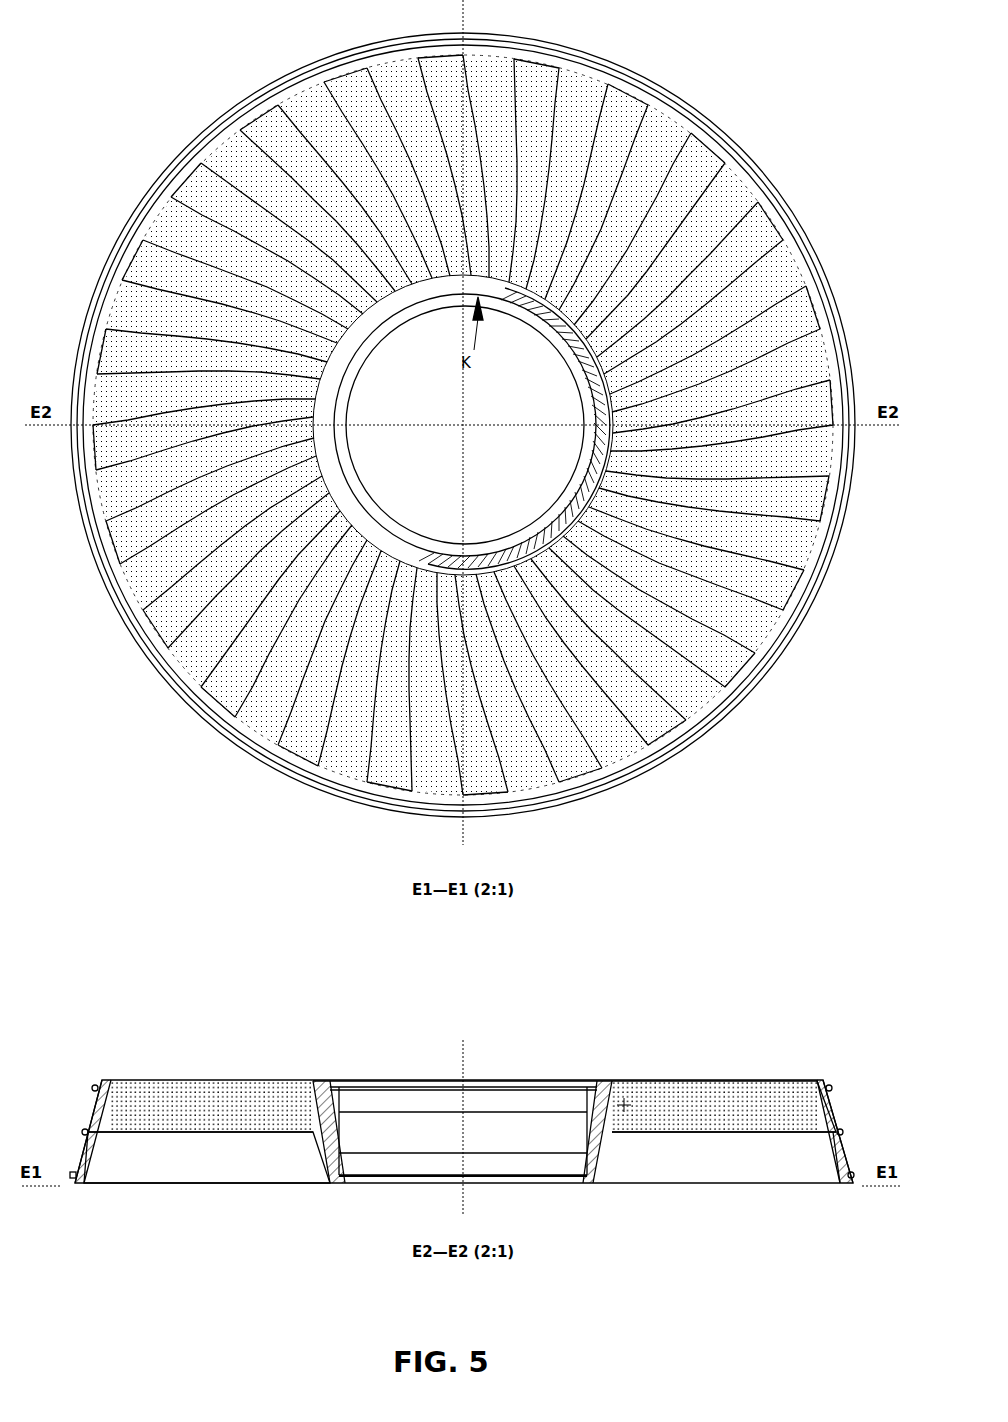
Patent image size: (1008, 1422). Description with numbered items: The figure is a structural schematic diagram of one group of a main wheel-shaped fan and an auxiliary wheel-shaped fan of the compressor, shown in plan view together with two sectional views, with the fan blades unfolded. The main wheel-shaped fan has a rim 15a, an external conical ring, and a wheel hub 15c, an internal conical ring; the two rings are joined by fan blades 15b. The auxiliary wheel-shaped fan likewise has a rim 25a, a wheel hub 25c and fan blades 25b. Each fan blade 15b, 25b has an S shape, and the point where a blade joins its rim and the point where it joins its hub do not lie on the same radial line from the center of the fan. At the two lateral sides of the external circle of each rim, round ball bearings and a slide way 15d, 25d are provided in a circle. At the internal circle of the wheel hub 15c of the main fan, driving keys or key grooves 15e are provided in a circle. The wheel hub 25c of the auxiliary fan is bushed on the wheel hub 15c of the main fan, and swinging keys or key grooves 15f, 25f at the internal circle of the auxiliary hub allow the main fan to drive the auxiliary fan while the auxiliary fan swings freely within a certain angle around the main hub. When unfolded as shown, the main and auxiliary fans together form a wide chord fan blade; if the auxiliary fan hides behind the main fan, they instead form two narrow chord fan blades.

The rim 15a is at (217, 133).
The fan blade 15b is at (200, 207).
The wheel hub 15c is at (277, 110).
The ball bearing and slide way 15d is at (73, 1175).
The driving keys or key grooves 15e is at (743, 647).
The swinging keys or key grooves 15f is at (652, 750).
The rim 25a is at (667, 100).
The fan blade 25b is at (750, 207).
The wheel hub 25c is at (713, 220).
The ball bearing and slide way 25d is at (817, 1085).
The swinging keys or key grooves 25f is at (710, 727).